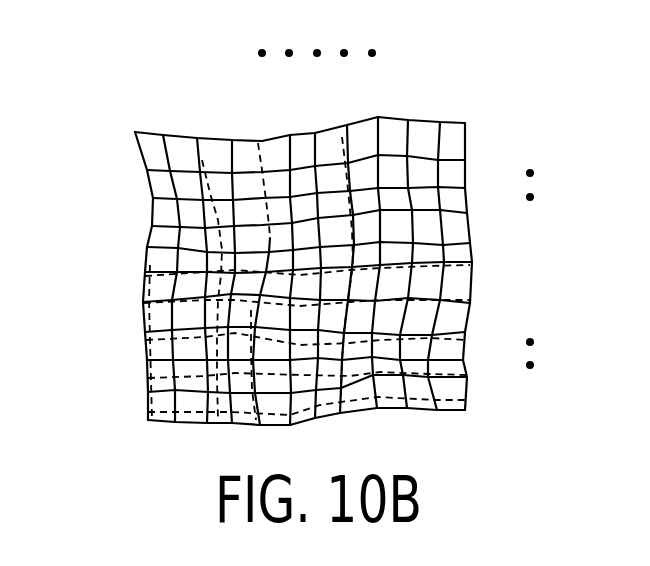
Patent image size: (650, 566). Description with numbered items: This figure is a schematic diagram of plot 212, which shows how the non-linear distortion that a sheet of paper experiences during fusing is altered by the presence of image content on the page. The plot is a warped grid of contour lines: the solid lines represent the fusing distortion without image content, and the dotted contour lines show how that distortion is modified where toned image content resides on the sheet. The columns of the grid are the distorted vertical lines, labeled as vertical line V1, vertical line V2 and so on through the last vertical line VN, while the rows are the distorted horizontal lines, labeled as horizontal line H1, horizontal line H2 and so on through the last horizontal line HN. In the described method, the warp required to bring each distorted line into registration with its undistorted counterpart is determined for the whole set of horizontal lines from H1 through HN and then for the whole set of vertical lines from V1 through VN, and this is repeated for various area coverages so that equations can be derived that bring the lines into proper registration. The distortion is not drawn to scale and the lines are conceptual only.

The plot 212 is at (150, 272).
The vertical line V1 is at (128, 106).
The vertical line V2 is at (160, 106).
The vertical line VN is at (460, 106).
The horizontal line H1 is at (338, 116).
The horizontal line H2 is at (344, 150).
The horizontal line HN is at (346, 399).